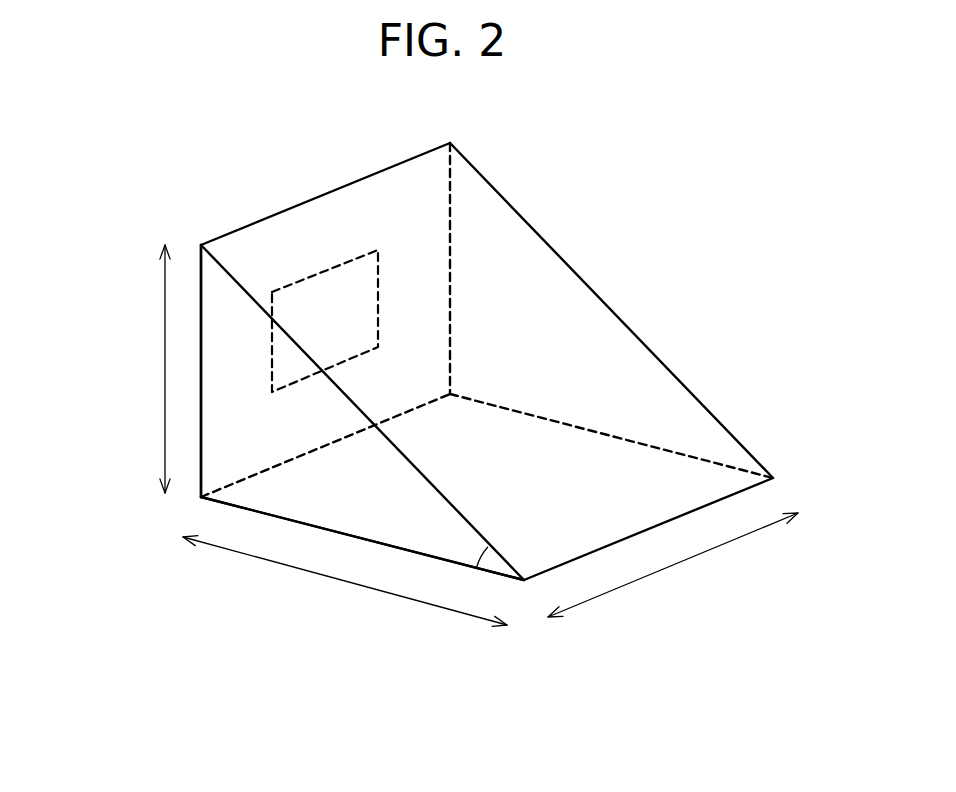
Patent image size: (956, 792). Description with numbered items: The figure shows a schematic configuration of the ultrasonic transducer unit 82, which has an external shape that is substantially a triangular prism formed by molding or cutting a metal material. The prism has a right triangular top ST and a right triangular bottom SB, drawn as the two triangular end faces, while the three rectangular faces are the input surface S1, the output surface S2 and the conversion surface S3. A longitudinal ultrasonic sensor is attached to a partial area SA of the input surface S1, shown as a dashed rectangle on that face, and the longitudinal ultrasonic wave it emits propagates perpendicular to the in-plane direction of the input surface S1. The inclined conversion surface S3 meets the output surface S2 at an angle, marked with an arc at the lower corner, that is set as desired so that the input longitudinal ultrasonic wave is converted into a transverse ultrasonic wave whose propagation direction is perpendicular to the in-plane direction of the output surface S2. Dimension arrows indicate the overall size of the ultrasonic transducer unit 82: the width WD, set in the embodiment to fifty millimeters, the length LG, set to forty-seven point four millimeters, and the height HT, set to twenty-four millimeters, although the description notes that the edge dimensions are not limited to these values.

The ultrasonic transducer unit 82 is at (690, 143).
The input surface S1 is at (389, 200).
The output surface S2 is at (532, 553).
The conversion surface S3 is at (596, 323).
The partial area of the input surface SA is at (333, 265).
The right triangular bottom SB is at (648, 405).
The right triangular top ST is at (237, 448).
The height HT is at (146, 369).
The length LG is at (345, 582).
The width WD is at (673, 565).